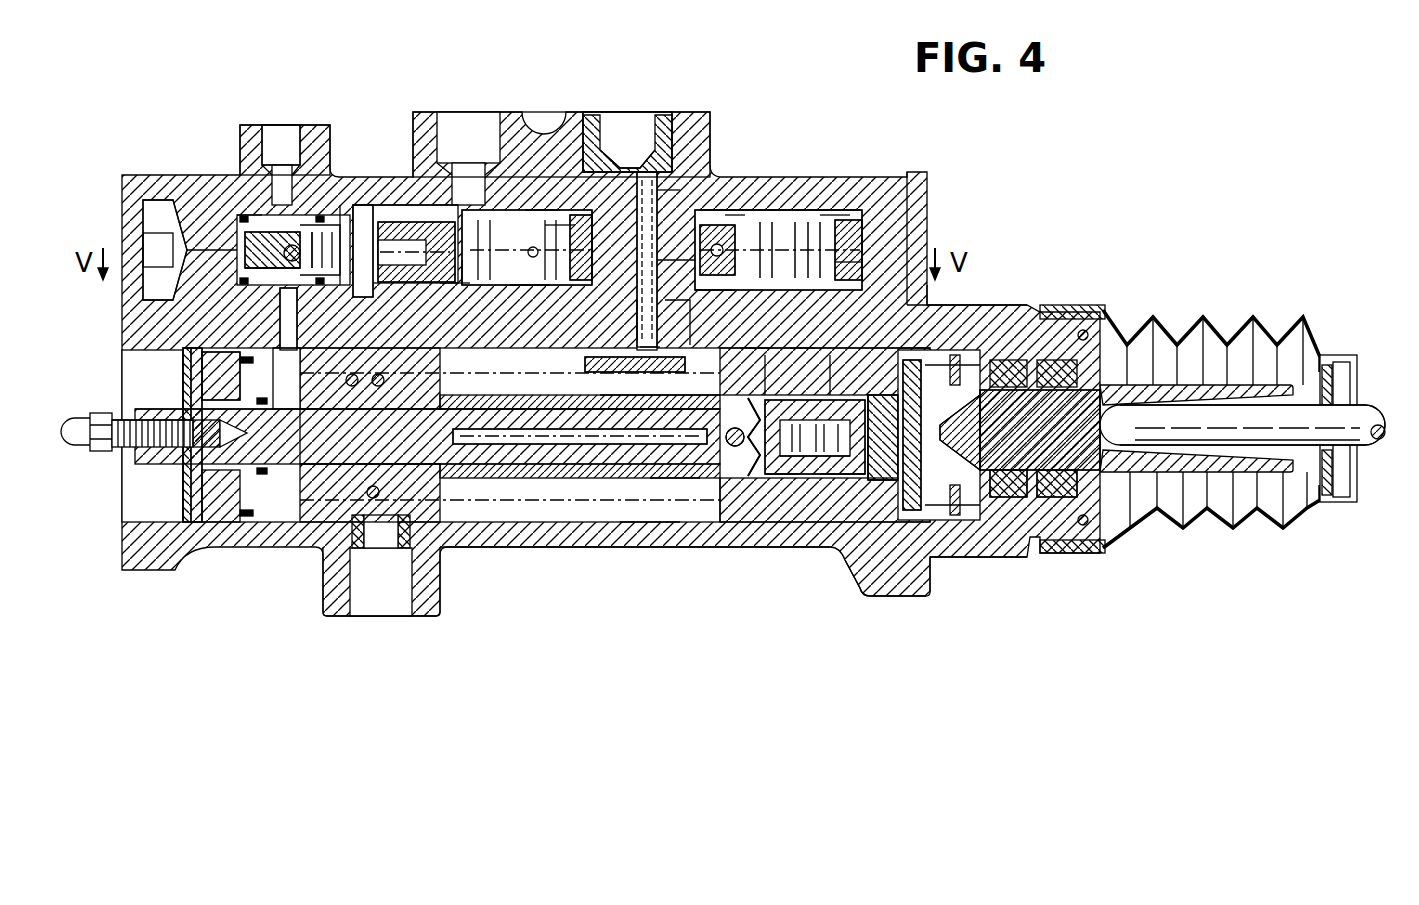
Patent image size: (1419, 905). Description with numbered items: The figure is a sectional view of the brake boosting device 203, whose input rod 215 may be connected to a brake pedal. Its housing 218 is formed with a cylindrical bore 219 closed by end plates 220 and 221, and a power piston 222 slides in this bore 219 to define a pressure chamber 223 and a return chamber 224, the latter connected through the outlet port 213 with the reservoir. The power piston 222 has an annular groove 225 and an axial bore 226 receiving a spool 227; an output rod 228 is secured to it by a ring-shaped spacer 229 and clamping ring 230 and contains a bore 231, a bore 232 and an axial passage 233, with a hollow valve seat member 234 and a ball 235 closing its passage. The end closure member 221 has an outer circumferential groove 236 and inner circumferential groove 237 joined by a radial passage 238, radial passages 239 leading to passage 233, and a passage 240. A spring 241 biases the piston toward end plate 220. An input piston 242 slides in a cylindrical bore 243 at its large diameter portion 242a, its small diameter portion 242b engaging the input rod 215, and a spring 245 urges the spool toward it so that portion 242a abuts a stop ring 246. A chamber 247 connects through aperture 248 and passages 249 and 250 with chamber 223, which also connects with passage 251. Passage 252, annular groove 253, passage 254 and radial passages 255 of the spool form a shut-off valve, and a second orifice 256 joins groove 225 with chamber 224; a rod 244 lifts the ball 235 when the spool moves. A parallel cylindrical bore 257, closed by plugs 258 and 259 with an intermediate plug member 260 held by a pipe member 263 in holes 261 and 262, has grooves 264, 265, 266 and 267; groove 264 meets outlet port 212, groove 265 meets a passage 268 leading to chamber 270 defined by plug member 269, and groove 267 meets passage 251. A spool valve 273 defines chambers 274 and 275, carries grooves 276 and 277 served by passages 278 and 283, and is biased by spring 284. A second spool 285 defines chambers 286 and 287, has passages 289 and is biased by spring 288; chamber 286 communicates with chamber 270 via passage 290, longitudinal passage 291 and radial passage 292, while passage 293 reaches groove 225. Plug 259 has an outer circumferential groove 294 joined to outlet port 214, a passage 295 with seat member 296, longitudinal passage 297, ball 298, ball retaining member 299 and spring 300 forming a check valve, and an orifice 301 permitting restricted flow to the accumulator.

The boosting device 203 is at (1034, 265).
The outlet port 212 is at (440, 128).
The outlet port 213 is at (355, 598).
The outlet port 214 is at (266, 128).
The input rod 215 is at (1363, 408).
The housing 218 is at (780, 196).
The cylindrical bore 219 is at (490, 512).
The end plate 220 is at (1045, 490).
The end plate 221 is at (208, 525).
The power piston 222 is at (650, 518).
The pressure chamber 223 is at (940, 495).
The return chamber 224 is at (405, 475).
The annular groove 225 is at (678, 530).
The axial bore 226 is at (800, 530).
The spool 227 is at (868, 486).
The output rod 228 is at (240, 408).
The ring-shaped spacer 229 is at (735, 518).
The clamping ring 230 is at (740, 480).
The bore 231 is at (745, 482).
The bore 232 is at (705, 356).
The axial passage 233 is at (700, 400).
The valve seat member 234 is at (783, 482).
The ball 235 is at (748, 402).
The outer circumferential groove 236 is at (296, 362).
The inner circumferential groove 237 is at (332, 411).
The radial passage 238 is at (262, 412).
The radial passages 239 is at (500, 480).
The passage 240 is at (281, 323).
The spring 241 is at (360, 463).
The input piston 242 is at (1165, 512).
The large diameter portion 242a is at (975, 462).
The small diameter portion 242b is at (1120, 515).
The cylindrical bore 243 is at (945, 557).
The rod 244 is at (862, 476).
The spring 245 is at (905, 559).
The stop ring 246 is at (995, 498).
The chamber 247 is at (778, 362).
The aperture 248 is at (920, 346).
The passage 249 is at (982, 440).
The passage 250 is at (960, 395).
The passage 251 is at (929, 302).
The passage 252 is at (800, 350).
The annular groove 253 is at (843, 370).
The passage 254 is at (828, 478).
The radial passages 255 is at (868, 420).
The second orifice 256 is at (755, 350).
The cylindrical bore 257 is at (352, 212).
The plug 258 is at (916, 222).
The plug 259 is at (173, 204).
The plug member 260 is at (710, 225).
The radial hole 261 is at (672, 196).
The radially extending hole 262 is at (637, 320).
The pipe member 263 is at (655, 197).
The circumferential groove 264 is at (468, 300).
The circumferential groove 265 is at (560, 228).
The circumferential groove 266 is at (763, 200).
The circumferential groove 267 is at (830, 210).
The passage 268 is at (533, 250).
The plug member 269 is at (603, 153).
The chamber 270 is at (604, 157).
The spool valve 273 is at (529, 199).
The chamber 274 is at (362, 225).
The chamber 275 is at (527, 275).
The groove 276 is at (420, 285).
The groove 277 is at (535, 205).
The passage 278 is at (393, 220).
The passage 283 is at (580, 232).
The spring 284 is at (483, 280).
The second spool 285 is at (786, 210).
The chamber 286 is at (705, 275).
The chamber 287 is at (852, 236).
The spring 288 is at (856, 263).
The passages 289 is at (735, 214).
The passage 290 is at (700, 300).
The longitudinal passage 291 is at (637, 168).
The radial passage 292 is at (670, 270).
The passage 293 is at (636, 343).
The outer circumferential groove 294 is at (280, 172).
The passage 295 is at (240, 228).
The seat member 296 is at (293, 268).
The longitudinal passage 297 is at (330, 268).
The ball 298 is at (258, 272).
The ball retaining member 299 is at (240, 258).
The spring 300 is at (248, 248).
The orifice 301 is at (254, 212).